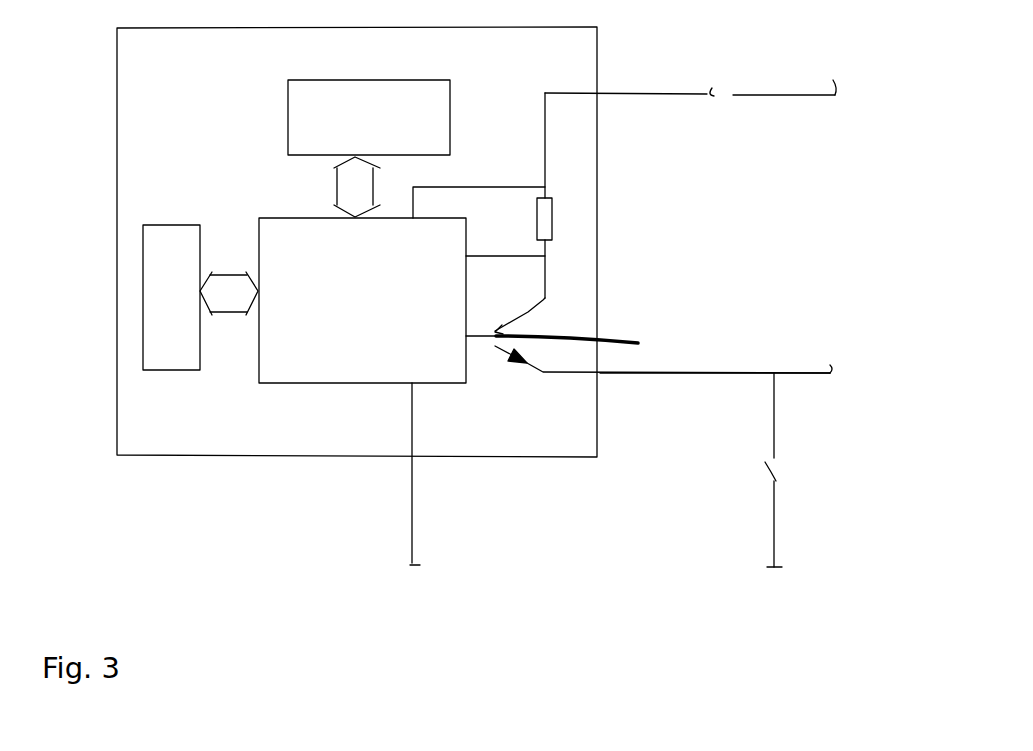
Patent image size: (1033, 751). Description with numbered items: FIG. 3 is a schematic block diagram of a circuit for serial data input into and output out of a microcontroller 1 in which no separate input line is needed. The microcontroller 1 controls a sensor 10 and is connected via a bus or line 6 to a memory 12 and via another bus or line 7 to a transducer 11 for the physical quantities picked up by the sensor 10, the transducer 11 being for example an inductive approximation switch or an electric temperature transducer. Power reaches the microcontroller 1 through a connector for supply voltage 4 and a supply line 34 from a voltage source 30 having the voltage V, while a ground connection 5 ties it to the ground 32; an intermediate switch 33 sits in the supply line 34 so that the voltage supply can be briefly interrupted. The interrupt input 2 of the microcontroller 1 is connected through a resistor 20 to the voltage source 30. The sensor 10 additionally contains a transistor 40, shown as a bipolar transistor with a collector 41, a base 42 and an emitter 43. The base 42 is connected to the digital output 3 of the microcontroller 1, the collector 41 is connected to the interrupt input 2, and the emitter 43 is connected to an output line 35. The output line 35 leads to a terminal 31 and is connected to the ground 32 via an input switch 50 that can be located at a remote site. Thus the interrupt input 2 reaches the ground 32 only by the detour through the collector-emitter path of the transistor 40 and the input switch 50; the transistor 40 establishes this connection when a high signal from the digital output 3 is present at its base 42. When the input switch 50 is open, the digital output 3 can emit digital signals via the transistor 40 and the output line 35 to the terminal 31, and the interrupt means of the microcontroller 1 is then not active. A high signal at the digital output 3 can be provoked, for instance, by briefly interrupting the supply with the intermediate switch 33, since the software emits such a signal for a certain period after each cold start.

The sensor 10 is at (202, 117).
The transducer 11 is at (432, 103).
The memory 12 is at (170, 242).
The microcontroller 1 is at (406, 321).
The interrupt input 2 is at (494, 262).
The digital output 3 is at (467, 337).
The connector for supply voltage 4 is at (476, 225).
The ground connection 5 is at (406, 455).
The bus or line 6 is at (227, 297).
The bus or line 7 is at (348, 183).
The resistor 20 is at (547, 223).
The voltage source 30 is at (835, 95).
The terminal 31 is at (830, 369).
The ground 32 is at (776, 560).
The intermediate switch 33 is at (720, 93).
The supply line 34 is at (652, 95).
The output line 35 is at (670, 373).
The transistor 40 is at (590, 338).
The collector 41 is at (530, 312).
The base 42 is at (489, 343).
The emitter 43 is at (534, 367).
The input switch 50 is at (774, 478).